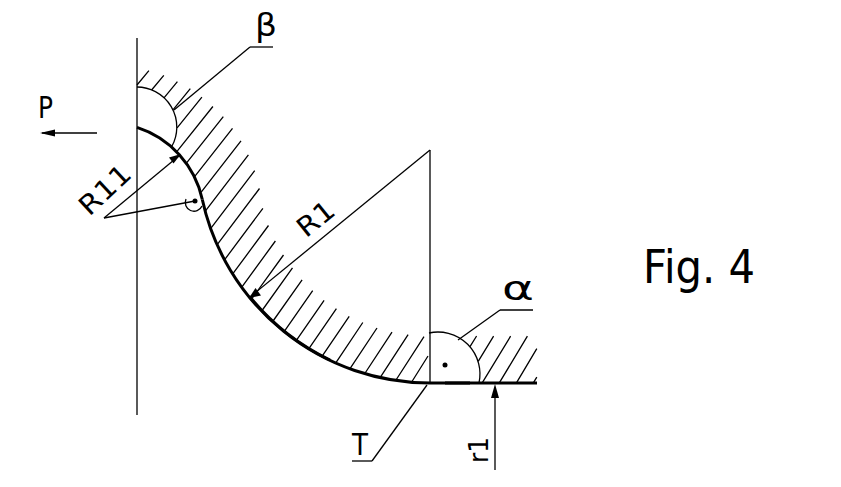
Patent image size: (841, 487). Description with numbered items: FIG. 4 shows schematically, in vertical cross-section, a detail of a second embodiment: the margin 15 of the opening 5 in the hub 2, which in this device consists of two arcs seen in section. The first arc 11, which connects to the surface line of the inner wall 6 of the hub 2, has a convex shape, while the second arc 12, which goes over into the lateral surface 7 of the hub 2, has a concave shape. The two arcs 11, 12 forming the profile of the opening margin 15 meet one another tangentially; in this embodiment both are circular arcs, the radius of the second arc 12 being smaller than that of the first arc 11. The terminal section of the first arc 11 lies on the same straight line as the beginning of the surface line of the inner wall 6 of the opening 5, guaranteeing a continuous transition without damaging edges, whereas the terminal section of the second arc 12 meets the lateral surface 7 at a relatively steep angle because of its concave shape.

The hub 2 is at (337, 268).
The opening 5 is at (535, 462).
The inner wall of the hub 6 is at (455, 386).
The lateral surface of the hub 7 is at (138, 68).
The first arc 11 is at (362, 372).
The second arc 12 is at (200, 163).
The opening margin 15 is at (291, 339).